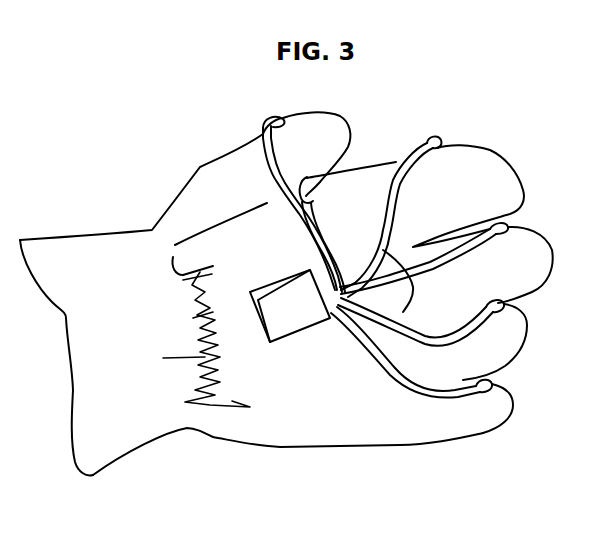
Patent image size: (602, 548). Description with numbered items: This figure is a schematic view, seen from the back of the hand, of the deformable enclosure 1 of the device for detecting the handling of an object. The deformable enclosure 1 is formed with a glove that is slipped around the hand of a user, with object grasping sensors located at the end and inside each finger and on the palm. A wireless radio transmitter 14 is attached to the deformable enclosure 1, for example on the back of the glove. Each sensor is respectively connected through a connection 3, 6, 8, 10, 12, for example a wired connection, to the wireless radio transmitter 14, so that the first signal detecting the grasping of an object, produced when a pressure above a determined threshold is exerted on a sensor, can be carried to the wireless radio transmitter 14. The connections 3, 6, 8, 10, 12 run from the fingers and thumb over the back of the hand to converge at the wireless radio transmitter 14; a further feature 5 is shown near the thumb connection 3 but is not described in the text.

The deformable enclosure 1 is at (97, 340).
The connection 3 is at (263, 130).
The strap loop 5 is at (310, 198).
The connection 6 is at (430, 143).
The connection 8 is at (470, 248).
The connection 10 is at (478, 323).
The connection 12 is at (443, 393).
The wireless radio transmitter 14 is at (297, 318).